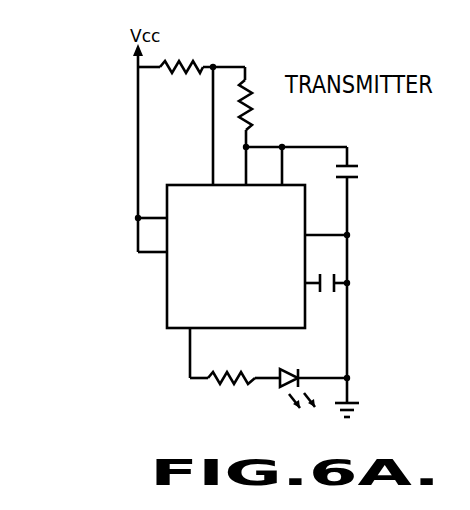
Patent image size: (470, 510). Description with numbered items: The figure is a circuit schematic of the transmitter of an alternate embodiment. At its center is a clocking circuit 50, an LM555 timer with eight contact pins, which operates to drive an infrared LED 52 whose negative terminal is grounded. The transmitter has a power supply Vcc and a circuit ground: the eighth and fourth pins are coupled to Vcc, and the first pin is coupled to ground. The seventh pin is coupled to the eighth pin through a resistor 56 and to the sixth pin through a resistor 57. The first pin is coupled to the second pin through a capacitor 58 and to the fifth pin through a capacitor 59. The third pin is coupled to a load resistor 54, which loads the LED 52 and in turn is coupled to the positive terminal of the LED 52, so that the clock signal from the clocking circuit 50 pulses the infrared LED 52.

The clocking circuit 50 is at (250, 274).
The infrared LED 52 is at (298, 366).
The load resistor 54 is at (240, 388).
The resistor 56 is at (190, 76).
The resistor 57 is at (250, 108).
The capacitor 58 is at (352, 164).
The capacitor 59 is at (336, 289).